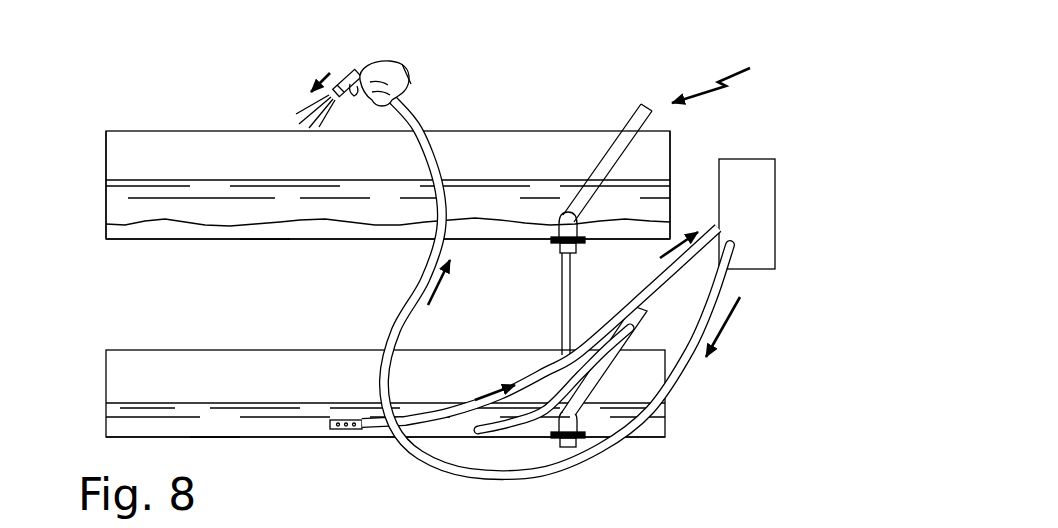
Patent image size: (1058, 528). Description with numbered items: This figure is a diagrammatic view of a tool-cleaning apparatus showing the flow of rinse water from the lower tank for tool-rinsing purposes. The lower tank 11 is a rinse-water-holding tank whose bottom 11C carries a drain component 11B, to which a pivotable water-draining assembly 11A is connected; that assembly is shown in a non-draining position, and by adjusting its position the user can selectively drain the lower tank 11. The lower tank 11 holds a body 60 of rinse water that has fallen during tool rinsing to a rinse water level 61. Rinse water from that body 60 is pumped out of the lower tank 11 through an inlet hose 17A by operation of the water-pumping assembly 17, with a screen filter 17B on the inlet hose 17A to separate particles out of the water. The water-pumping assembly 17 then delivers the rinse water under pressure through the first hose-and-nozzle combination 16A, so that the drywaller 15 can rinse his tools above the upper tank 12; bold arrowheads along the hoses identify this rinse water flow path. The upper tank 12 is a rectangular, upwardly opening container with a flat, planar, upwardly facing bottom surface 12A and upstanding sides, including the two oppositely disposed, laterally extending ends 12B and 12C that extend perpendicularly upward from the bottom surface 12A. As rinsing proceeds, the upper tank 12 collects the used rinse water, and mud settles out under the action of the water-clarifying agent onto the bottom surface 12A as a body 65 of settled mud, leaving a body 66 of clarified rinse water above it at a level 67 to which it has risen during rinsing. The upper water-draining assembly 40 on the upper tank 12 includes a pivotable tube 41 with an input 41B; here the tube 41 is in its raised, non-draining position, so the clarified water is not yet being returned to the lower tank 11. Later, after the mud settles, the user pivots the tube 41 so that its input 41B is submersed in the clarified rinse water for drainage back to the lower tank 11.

The lower tank 11 is at (136, 350).
The water-draining assembly 11A is at (624, 368).
The drain component 11B is at (580, 440).
The bottom 11C is at (207, 433).
The upper tank 12 is at (132, 130).
The bottom surface 12A is at (258, 238).
The end 12B is at (672, 148).
The end 12C is at (106, 143).
The drywaller 15 is at (405, 66).
The first hose-and-nozzle combination 16A is at (410, 120).
The water-pumping assembly 17 is at (778, 178).
The inlet hose 17A is at (688, 262).
The screen filter 17B is at (343, 430).
The upper water-draining assembly 40 is at (729, 77).
The tube 41 is at (623, 140).
The input 41B is at (642, 100).
The body of rinse water 60 is at (120, 430).
The rinse water level 61 is at (118, 403).
The body of settled mud 65 is at (118, 240).
The body of clarified rinse water 66 is at (112, 210).
The level 67 is at (117, 180).